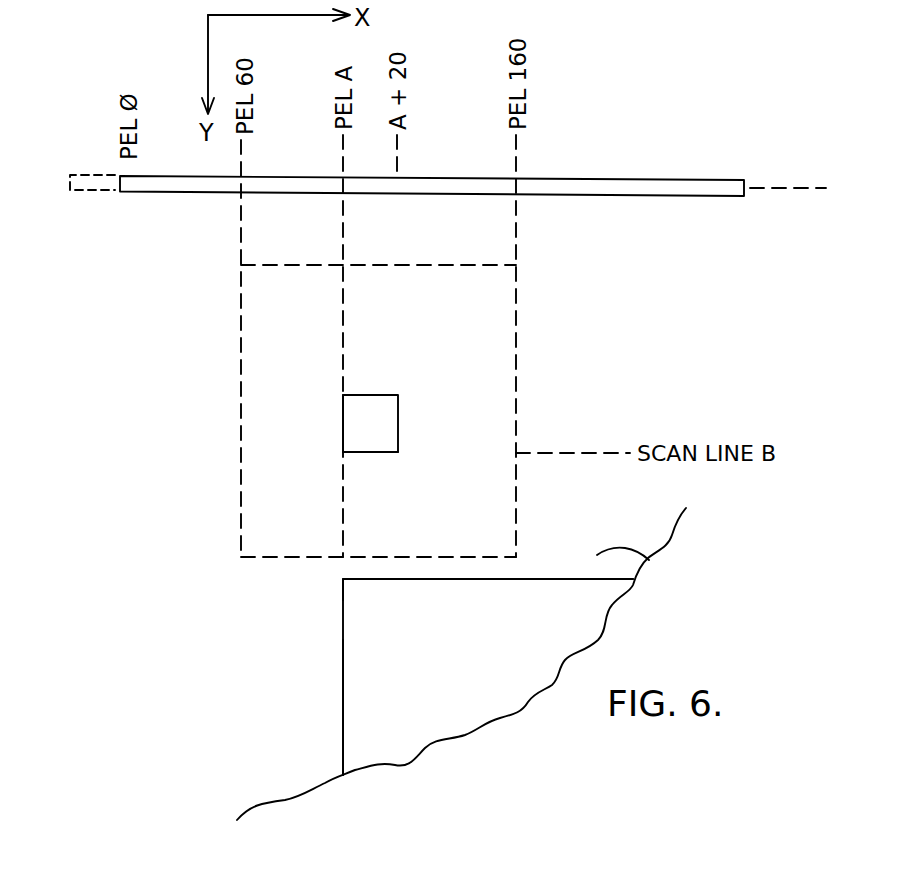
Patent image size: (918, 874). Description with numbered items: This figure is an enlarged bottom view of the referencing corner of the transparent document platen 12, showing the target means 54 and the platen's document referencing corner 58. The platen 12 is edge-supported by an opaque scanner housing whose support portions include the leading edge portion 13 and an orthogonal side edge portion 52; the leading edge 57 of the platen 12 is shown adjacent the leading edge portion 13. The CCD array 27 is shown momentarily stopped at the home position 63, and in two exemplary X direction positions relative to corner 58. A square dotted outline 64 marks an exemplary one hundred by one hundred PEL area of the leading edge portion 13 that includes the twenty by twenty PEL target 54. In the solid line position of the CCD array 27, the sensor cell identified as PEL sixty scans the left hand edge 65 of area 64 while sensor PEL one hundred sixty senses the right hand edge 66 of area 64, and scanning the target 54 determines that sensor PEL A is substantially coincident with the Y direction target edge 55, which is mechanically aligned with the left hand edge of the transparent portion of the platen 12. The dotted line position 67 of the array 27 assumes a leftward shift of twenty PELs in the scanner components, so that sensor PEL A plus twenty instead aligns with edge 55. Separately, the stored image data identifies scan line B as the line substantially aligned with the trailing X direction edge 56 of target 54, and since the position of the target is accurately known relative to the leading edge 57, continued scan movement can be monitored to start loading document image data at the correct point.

The document platen 12 is at (490, 692).
The leading edge portion 13 is at (650, 560).
The CCD array 27 is at (175, 186).
The side edge portion 52 is at (300, 686).
The target means 54 is at (365, 407).
The Y direction target edge 55 is at (343, 425).
The trailing X direction edge 56 is at (378, 452).
The leading edge 57 is at (556, 580).
The document referencing corner 58 is at (355, 582).
The home position 63 is at (798, 188).
The PEL area 64 is at (478, 392).
The left hand edge 65 is at (240, 373).
The right hand edge 66 is at (520, 418).
The dotted line position 67 is at (99, 174).